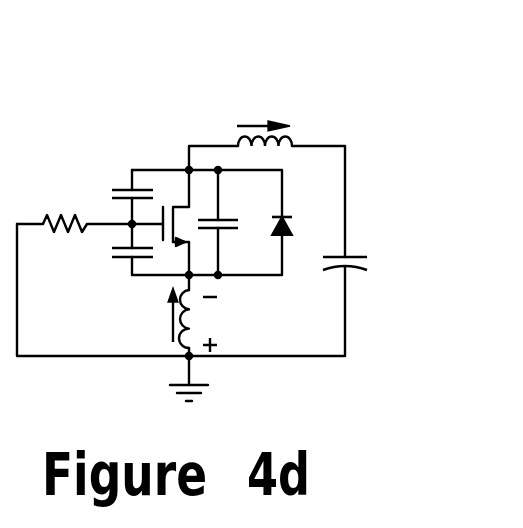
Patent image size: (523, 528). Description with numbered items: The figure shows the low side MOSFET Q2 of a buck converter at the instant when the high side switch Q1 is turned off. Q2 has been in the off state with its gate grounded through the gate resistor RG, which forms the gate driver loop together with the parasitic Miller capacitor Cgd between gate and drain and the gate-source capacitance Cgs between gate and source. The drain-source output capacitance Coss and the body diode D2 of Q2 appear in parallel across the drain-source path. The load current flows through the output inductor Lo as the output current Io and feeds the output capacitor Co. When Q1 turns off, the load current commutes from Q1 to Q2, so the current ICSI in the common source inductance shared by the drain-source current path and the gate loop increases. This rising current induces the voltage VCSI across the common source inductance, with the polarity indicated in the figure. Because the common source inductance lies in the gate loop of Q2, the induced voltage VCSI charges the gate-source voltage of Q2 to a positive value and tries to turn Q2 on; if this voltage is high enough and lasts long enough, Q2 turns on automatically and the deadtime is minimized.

The gate resistor RG is at (65, 203).
The Miller capacitor Cgd is at (117, 182).
The gate-source capacitance Cgs is at (115, 265).
The output capacitance Coss is at (237, 203).
The body diode D2 is at (301, 228).
The output inductor Lo is at (274, 158).
The output current Io is at (263, 112).
The output capacitor Co is at (353, 249).
The common source inductance current ICSI is at (160, 314).
The common source inductance voltage VCSI is at (224, 324).